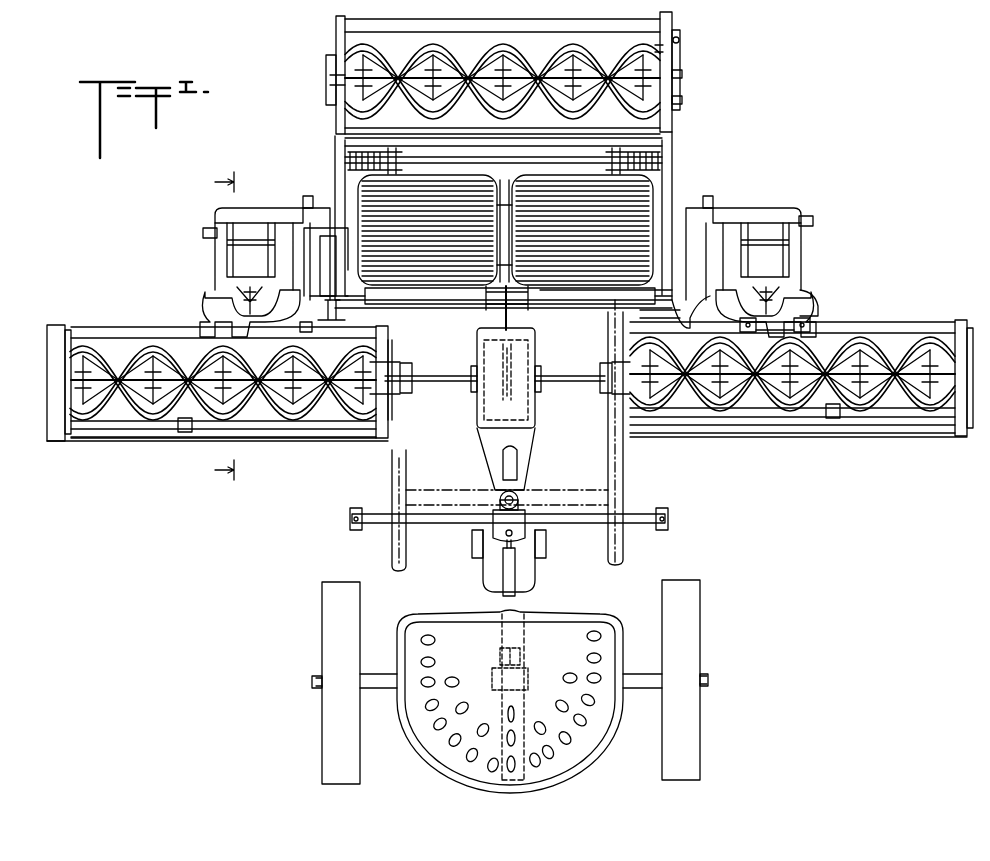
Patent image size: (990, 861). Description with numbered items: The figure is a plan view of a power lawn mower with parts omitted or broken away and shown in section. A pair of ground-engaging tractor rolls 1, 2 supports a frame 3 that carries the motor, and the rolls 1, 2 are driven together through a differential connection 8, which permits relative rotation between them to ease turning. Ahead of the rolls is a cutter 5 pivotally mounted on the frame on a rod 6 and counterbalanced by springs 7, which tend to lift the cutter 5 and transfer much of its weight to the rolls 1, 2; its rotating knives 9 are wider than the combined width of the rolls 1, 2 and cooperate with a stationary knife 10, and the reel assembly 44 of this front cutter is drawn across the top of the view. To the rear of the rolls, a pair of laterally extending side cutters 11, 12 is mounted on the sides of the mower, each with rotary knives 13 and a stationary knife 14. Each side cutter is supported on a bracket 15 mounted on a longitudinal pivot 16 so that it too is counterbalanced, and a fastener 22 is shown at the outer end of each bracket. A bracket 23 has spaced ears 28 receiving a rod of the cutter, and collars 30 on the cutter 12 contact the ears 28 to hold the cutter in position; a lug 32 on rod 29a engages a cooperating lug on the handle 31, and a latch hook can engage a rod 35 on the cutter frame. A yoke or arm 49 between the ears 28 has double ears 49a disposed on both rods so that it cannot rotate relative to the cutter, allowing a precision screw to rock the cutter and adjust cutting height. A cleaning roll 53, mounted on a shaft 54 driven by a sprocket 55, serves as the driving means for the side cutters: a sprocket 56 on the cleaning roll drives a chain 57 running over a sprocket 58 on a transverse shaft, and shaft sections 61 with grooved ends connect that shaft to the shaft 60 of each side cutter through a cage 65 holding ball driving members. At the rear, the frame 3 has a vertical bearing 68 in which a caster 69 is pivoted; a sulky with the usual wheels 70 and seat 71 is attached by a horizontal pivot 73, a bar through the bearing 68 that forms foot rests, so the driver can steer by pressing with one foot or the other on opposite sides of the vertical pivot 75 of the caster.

The tractor roll 1 is at (418, 186).
The tractor roll 2 is at (565, 186).
The frame 3 is at (525, 445).
The cutter 5 is at (684, 76).
The rod 6 is at (484, 166).
The springs 7 is at (340, 160).
The differential connection 8 is at (502, 206).
The knives 9 is at (662, 39).
The stationary knife 10 is at (336, 118).
The laterally extending cutter 11 is at (70, 322).
The laterally extending cutter 12 is at (932, 324).
The rotary knives 13 is at (118, 412).
The stationary knife 14 is at (108, 370).
The bracket 15 is at (292, 212).
The pivot 16 is at (308, 198).
The bolt 22 is at (203, 233).
The bracket 23 is at (210, 308).
The ears 28 is at (818, 300).
The rod 29a is at (280, 431).
The collars 30 is at (812, 314).
The handle 31 is at (408, 472).
The lug 32 is at (181, 434).
The rod 35 is at (174, 316).
The front reel 44 is at (470, 76).
The yoke or arm 49 is at (796, 298).
The double ears 49a is at (790, 322).
The cleaning roll 53 is at (574, 304).
The shaft 54 is at (392, 300).
The sprocket 55 is at (332, 330).
The sprocket 56 is at (500, 312).
The chain 57 is at (512, 322).
The sprocket 58 is at (540, 366).
The shaft 60 is at (321, 407).
The shaft section 61 is at (452, 376).
The cage 65 is at (406, 394).
The bearing 68 is at (524, 490).
The caster 69 is at (537, 571).
The wheels 70 is at (700, 627).
The seat 71 is at (627, 607).
The horizontal pivot 73 is at (424, 524).
The vertical pivot 75 is at (500, 498).